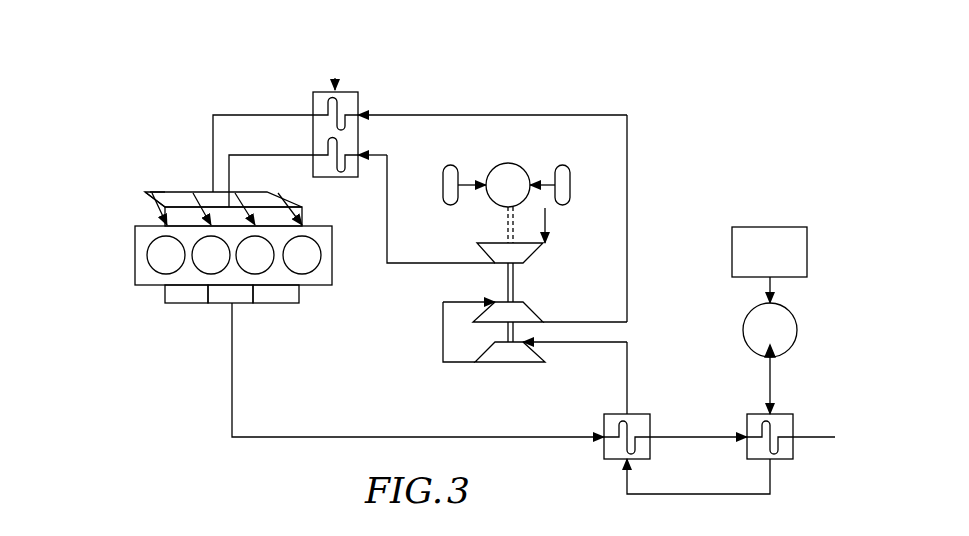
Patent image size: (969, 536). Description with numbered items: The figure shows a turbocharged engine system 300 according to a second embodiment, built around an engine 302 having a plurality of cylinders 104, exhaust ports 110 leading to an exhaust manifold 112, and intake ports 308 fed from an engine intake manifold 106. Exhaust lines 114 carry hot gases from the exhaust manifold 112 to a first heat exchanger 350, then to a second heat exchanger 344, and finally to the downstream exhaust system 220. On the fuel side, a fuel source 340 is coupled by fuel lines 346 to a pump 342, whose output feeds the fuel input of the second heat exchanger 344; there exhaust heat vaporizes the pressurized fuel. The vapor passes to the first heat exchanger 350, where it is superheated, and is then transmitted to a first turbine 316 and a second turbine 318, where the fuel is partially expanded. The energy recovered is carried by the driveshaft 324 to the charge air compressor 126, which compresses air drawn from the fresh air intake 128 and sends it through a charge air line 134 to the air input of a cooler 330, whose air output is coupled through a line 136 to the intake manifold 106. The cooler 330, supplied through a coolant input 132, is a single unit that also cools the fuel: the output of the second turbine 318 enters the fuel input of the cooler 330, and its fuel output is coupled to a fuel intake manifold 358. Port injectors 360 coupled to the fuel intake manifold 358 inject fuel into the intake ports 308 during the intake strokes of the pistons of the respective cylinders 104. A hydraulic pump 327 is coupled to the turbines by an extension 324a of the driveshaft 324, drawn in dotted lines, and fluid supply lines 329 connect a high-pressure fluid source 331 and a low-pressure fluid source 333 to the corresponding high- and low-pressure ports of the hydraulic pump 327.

The turbocharged engine system 300 is at (551, 45).
The engine 302 is at (80, 262).
The cylinders 104 is at (155, 252).
The intake manifold 106 is at (272, 193).
The exhaust ports 110 is at (166, 295).
The exhaust manifold 112 is at (283, 305).
The exhaust line 114 is at (232, 362).
The charge air compressor 126 is at (485, 252).
The fresh air intake 128 is at (545, 224).
The coolant input 132 is at (335, 78).
The charge air line 134 is at (387, 165).
The intake passage to engine 136 is at (292, 155).
The downstream exhaust system 220 is at (815, 437).
The intake ports 308 is at (182, 192).
The first turbine 316 is at (512, 362).
The second turbine 318 is at (528, 315).
The driveshaft 324 is at (506, 284).
The driveshaft extension 324a is at (503, 222).
The hydraulic pump 327 is at (506, 164).
The fluid supply lines 329 is at (540, 182).
The cooler 330 is at (352, 95).
The high-pressure fluid source 331 is at (446, 186).
The low-pressure fluid source 333 is at (566, 180).
The fuel source 340 is at (786, 232).
The pump 342 is at (790, 325).
The second heat exchanger 344 is at (790, 450).
The fuel lines 346 is at (248, 114).
The first heat exchanger 350 is at (604, 450).
The fuel intake manifold 358 is at (157, 190).
The port injectors 360 is at (147, 192).